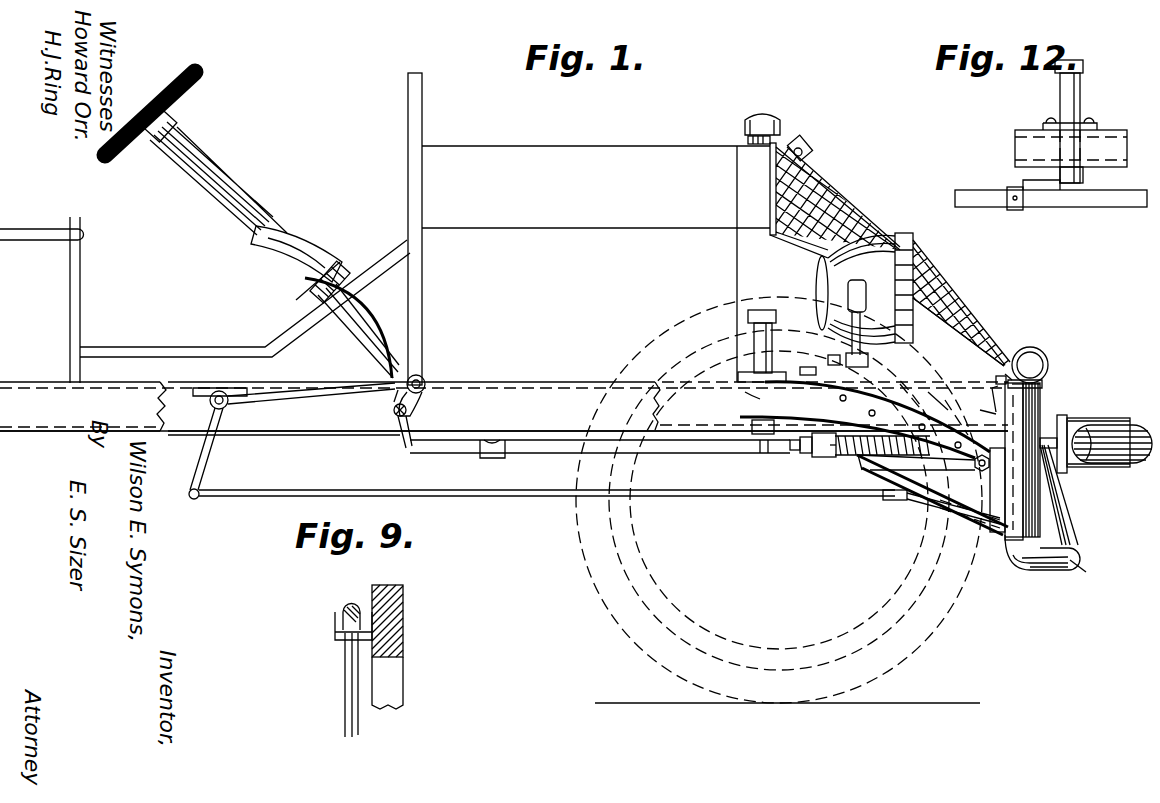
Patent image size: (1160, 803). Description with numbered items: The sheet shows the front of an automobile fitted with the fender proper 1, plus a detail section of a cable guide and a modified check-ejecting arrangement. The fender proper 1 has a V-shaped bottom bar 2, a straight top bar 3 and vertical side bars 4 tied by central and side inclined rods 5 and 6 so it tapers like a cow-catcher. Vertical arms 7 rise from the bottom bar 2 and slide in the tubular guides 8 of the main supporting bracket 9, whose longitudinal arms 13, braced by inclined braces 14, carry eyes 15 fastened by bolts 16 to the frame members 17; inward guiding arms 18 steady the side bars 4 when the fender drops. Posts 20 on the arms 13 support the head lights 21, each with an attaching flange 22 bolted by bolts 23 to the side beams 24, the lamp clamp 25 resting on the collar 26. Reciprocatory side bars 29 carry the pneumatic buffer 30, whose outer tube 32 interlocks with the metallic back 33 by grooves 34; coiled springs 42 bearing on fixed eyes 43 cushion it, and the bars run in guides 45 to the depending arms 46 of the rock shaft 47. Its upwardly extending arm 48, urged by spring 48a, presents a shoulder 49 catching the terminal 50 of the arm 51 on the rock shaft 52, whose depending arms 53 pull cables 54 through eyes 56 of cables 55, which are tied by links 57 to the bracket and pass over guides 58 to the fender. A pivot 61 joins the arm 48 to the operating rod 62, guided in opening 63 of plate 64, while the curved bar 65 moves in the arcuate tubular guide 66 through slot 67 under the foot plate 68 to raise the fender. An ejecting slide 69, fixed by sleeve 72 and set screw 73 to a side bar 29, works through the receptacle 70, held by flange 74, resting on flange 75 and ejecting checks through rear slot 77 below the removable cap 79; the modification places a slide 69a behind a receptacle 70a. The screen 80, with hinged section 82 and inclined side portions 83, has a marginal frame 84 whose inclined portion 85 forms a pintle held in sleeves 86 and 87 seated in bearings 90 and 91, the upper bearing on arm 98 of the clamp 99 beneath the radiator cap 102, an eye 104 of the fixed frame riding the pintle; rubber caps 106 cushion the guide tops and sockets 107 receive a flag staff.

In FIG. 1, the fender proper 1 is at (1042, 559).
In FIG. 1, the bottom bar 2 is at (1084, 573).
In FIG. 1, the top bar 3 is at (1042, 396).
In FIG. 1, the vertical side bars 4 is at (1058, 520).
In FIG. 1, the central inclined rods 5 is at (1065, 530).
In FIG. 1, the side inclined rods 6 is at (1052, 498).
In FIG. 1, the vertical arms 7 is at (1010, 535).
In FIG. 1, the vertical tubular guides 8 is at (1005, 540).
In FIG. 1, the main supporting bracket 9 is at (934, 409).
In FIG. 1, the horizontal longitudinal arms 13 is at (870, 457).
In FIG. 1, the inclined braces 14 is at (912, 493).
In FIG. 9, the inclined braces 14 is at (404, 642).
In FIG. 1, the eyes 15 is at (995, 490).
In FIG. 1, the bolts 16 is at (978, 468).
In FIG. 1, the frame members 17 is at (915, 405).
In FIG. 1, the guiding arms 18 is at (1046, 484).
In FIG. 1, the posts or standards 20 is at (875, 396).
In FIG. 1, the head lights 21 is at (914, 252).
In FIG. 1, the attaching flanges 22 is at (804, 361).
In FIG. 1, the bolts 23 is at (833, 349).
In FIG. 1, the side beams 24 is at (615, 382).
In FIG. 1, the clamp or eye 25 is at (848, 296).
In FIG. 1, the supporting collar or shoulder 26 is at (870, 358).
In FIG. 1, the reciprocatory side bars 29 is at (640, 435).
In FIG. 12, the reciprocatory side bars 29 is at (1126, 207).
In FIG. 1, the pneumatic buffer 30 is at (1122, 425).
In FIG. 1, the outer tube 32 is at (1140, 464).
In FIG. 1, the metallic back 33 is at (1096, 413).
In FIG. 1, the grooves 34 is at (1106, 418).
In FIG. 1, the coiled springs 42 is at (850, 470).
In FIG. 1, the fixed eyes 43 is at (824, 460).
In FIG. 1, the guides 45 is at (494, 458).
In FIG. 1, the depending arms 46 is at (406, 450).
In FIG. 1, the transverse rock shaft 47 is at (395, 420).
In FIG. 1, the upwardly extending arm 48 is at (416, 400).
In FIG. 1, the spring 48a is at (407, 412).
In FIG. 1, the projecting shoulder 49 is at (422, 376).
In FIG. 1, the projecting terminal 50 is at (372, 394).
In FIG. 1, the arm 51 is at (301, 392).
In FIG. 1, the rock shaft 52 is at (219, 390).
In FIG. 1, the depending arms 53 is at (212, 452).
In FIG. 1, the wire cords or cables 54 is at (472, 497).
In FIG. 1, the wire cords or cables 55 is at (920, 500).
In FIG. 9, the wire cords or cables 55 is at (345, 706).
In FIG. 1, the eyes 56 is at (888, 498).
In FIG. 1, the links 57 is at (994, 408).
In FIG. 1, the guides 58 is at (962, 512).
In FIG. 9, the guides 58 is at (336, 633).
In FIG. 1, the pivot 61 is at (425, 383).
In FIG. 1, the inclined operating rod 62 is at (372, 352).
In FIG. 1, the opening 63 is at (340, 316).
In FIG. 1, the plate 64 is at (305, 300).
In FIG. 1, the curved bar 65 is at (370, 280).
In FIG. 1, the arcuate tubular guide 66 is at (300, 240).
In FIG. 1, the longitudinal slot 67 is at (282, 250).
In FIG. 1, the foot plate 68 is at (334, 266).
In FIG. 1, the ejecting slide 69 is at (775, 430).
In FIG. 12, the ejecting slide 69a is at (1040, 205).
In FIG. 1, the vertical receptacle 70 is at (754, 347).
In FIG. 12, the check holding receptacle 70a is at (1080, 90).
In FIG. 1, the sleeve 72 is at (804, 455).
In FIG. 1, the set screw 73 is at (794, 452).
In FIG. 1, the attaching flange 74 is at (742, 373).
In FIG. 1, the forwardly projecting flange 75 is at (760, 435).
In FIG. 1, the rear slots 77 is at (740, 440).
In FIG. 1, the removable cap 79 is at (748, 317).
In FIG. 1, the screen 80 is at (936, 312).
In FIG. 1, the hinged section 82 is at (856, 206).
In FIG. 1, the side portions 83 is at (780, 240).
In FIG. 1, the marginal metallic frame 84 is at (770, 158).
In FIG. 1, the pintle rod 85 is at (945, 276).
In FIG. 1, the upper eye or sleeve 86 is at (808, 150).
In FIG. 1, the lower eye or sleeve 87 is at (996, 380).
In FIG. 1, the upper bearing 90 is at (820, 180).
In FIG. 1, the lower bearing 91 is at (940, 397).
In FIG. 1, the plate or arm 98 is at (802, 146).
In FIG. 1, the clamp 99 is at (748, 140).
In FIG. 1, the radiator cap 102 is at (770, 118).
In FIG. 1, the eye 104 is at (1008, 370).
In FIG. 1, the caps 106 is at (1046, 357).
In FIG. 1, the vertical sockets 107 is at (1046, 380).